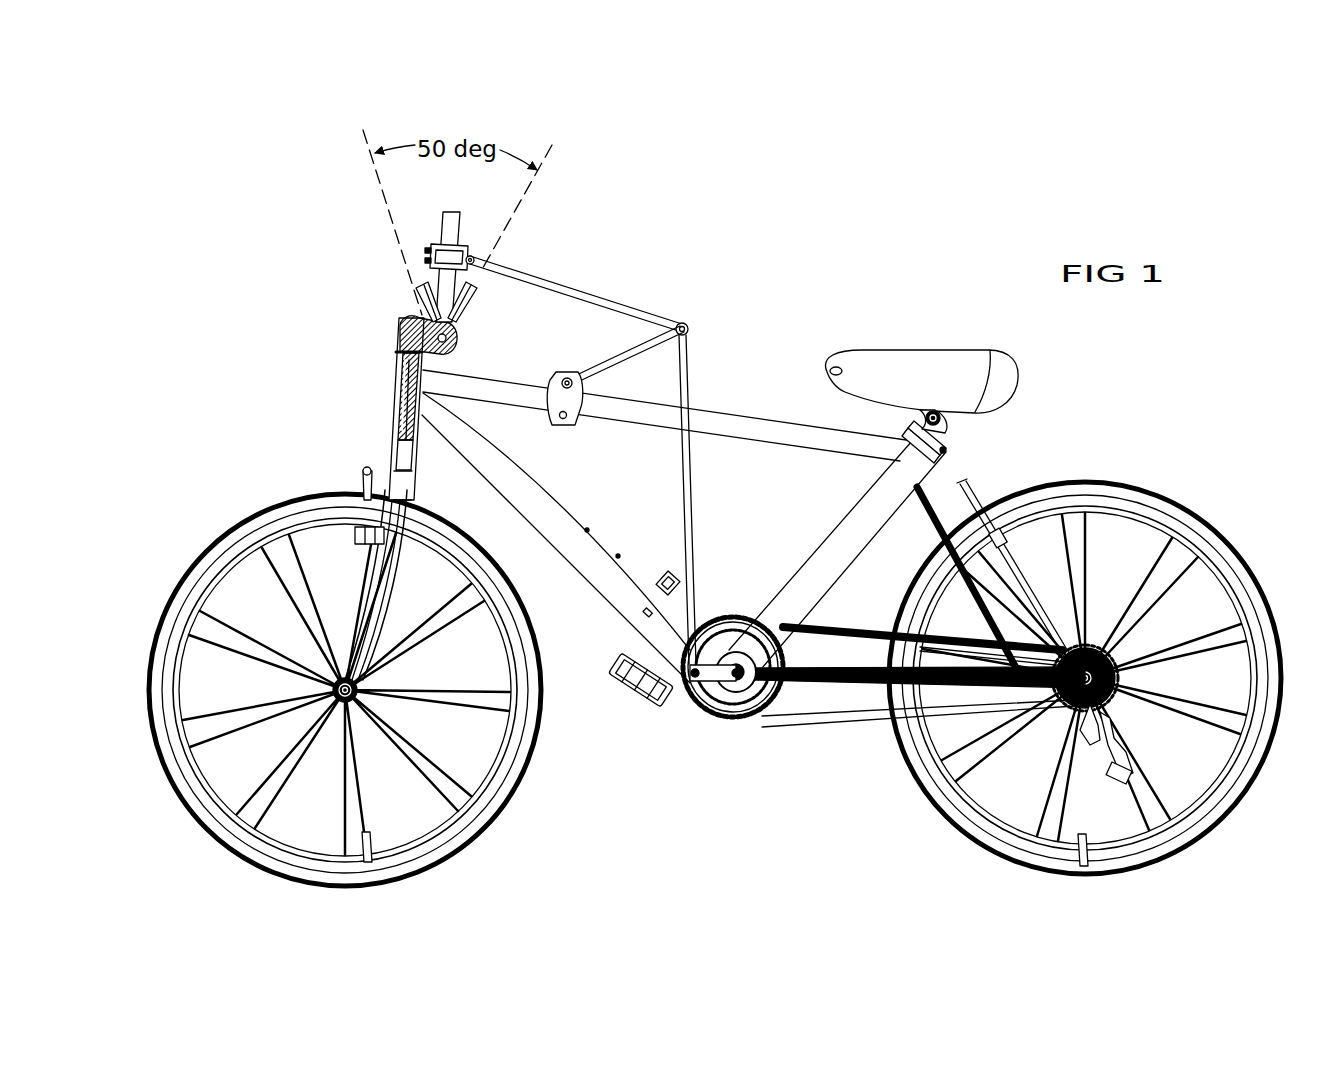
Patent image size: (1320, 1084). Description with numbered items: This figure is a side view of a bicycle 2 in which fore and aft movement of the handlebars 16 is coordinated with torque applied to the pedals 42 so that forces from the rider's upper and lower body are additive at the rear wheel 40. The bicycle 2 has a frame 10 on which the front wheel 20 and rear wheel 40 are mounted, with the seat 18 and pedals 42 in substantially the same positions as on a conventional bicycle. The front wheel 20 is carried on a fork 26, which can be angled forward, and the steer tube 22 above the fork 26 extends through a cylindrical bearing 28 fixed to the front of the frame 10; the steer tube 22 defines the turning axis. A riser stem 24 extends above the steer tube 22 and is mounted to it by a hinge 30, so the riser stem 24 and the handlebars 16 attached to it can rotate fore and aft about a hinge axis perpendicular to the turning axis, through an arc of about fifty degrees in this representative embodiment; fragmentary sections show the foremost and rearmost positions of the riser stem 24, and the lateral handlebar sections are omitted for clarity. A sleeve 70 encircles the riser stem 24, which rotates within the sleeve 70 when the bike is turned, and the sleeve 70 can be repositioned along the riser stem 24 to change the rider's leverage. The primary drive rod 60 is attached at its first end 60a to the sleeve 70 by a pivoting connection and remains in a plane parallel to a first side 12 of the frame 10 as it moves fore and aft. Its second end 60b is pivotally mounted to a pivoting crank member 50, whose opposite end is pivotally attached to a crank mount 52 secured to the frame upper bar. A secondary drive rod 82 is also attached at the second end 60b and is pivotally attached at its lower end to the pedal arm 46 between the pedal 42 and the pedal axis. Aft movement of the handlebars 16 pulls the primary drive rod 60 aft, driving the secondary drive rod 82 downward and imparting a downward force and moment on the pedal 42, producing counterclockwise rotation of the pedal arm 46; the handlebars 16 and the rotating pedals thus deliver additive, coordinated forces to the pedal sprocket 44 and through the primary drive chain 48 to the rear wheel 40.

The bicycle 2 is at (913, 317).
The frame 10 is at (723, 412).
The first side of the frame 12 is at (593, 555).
The handlebars 16 is at (447, 222).
The seat 18 is at (987, 370).
The front wheel 20 is at (262, 523).
The steer tube 22 is at (393, 443).
The riser stem 24 is at (440, 293).
The fork 26 is at (385, 615).
The cylindrical bearing 28 is at (397, 400).
The hinge 30 is at (452, 331).
The rear wheel 40 is at (1110, 490).
The pedals 42 is at (643, 683).
The pedal sprocket 44 is at (753, 723).
The pedal arm 46 is at (672, 672).
The primary drive chain 48 is at (850, 722).
The pivoting crank member 50 is at (623, 357).
The crank mount 52 is at (564, 398).
The primary drive rod 60 is at (580, 290).
The primary drive rod first end 60a is at (472, 258).
The primary drive rod second end 60b is at (684, 324).
The sleeve 70 is at (430, 252).
The secondary drive rod 82 is at (690, 527).